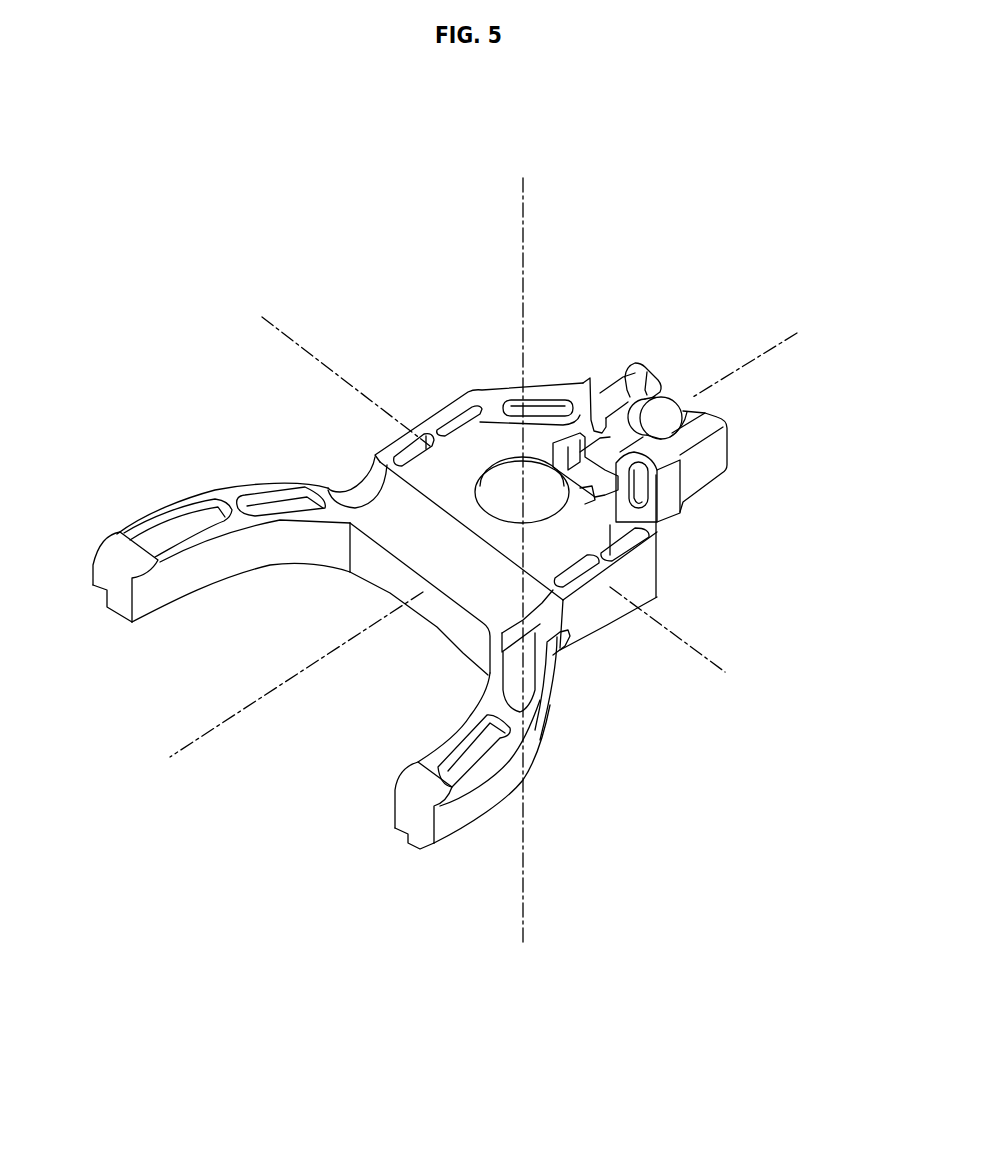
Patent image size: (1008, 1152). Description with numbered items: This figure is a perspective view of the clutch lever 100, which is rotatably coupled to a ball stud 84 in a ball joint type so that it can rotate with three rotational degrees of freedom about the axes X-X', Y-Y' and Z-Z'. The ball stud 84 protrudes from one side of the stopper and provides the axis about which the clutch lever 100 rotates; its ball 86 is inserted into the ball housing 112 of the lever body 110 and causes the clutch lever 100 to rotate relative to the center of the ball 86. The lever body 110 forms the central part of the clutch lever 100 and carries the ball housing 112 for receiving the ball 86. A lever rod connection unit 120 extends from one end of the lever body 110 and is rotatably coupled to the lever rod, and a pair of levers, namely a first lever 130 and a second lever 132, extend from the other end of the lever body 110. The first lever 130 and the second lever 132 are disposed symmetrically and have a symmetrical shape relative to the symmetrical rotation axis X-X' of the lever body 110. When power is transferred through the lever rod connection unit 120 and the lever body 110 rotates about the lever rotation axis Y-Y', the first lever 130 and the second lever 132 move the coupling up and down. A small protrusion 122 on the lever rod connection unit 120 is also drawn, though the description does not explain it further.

The clutch lever 100 is at (171, 214).
The lever body 110 is at (585, 572).
The ball housing 112 is at (582, 518).
The lever rod connection unit 120 is at (710, 465).
The protrusion 122 is at (650, 395).
The first lever 130 is at (432, 790).
The second lever 132 is at (123, 562).
The ball stud 84 is at (532, 472).
The ball 86 is at (517, 477).